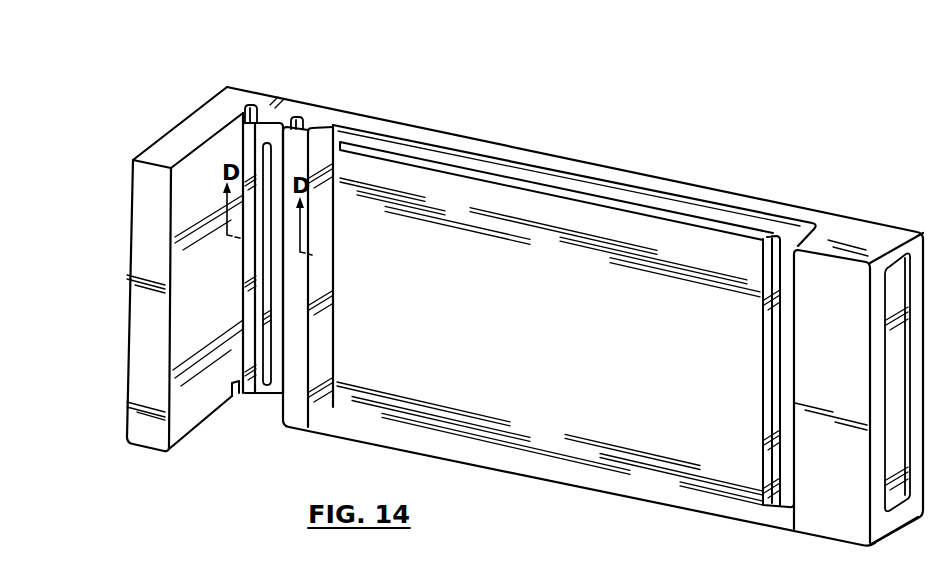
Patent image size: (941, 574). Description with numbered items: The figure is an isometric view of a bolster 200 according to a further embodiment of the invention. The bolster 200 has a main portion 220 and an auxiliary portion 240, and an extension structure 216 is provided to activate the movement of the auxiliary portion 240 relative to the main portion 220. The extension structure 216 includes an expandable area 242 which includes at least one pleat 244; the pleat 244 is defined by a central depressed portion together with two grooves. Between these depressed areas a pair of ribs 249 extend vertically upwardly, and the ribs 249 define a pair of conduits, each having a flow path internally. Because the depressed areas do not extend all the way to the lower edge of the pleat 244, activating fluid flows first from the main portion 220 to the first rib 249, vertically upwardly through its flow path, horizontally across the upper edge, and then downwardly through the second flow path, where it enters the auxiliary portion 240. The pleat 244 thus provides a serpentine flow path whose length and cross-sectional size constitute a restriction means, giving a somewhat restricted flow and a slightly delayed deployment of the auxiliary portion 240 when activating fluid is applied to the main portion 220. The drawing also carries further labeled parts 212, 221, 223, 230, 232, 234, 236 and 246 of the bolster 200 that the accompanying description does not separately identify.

The bolster 200 is at (645, 128).
The opening 212 is at (597, 385).
The extension structure 216 is at (192, 317).
The main portion 220 is at (472, 136).
The bottom rail 221 is at (515, 475).
The front surface 223 is at (152, 202).
The top edge 230 is at (712, 210).
The left end wall 232 is at (323, 237).
The right end wall 234 is at (786, 277).
The inner bar 236 is at (771, 223).
The auxiliary portion 240 is at (182, 128).
The expandable area 242 is at (273, 118).
The pleat 244 is at (270, 140).
The side face 246 is at (190, 270).
The rib 249 is at (250, 308).